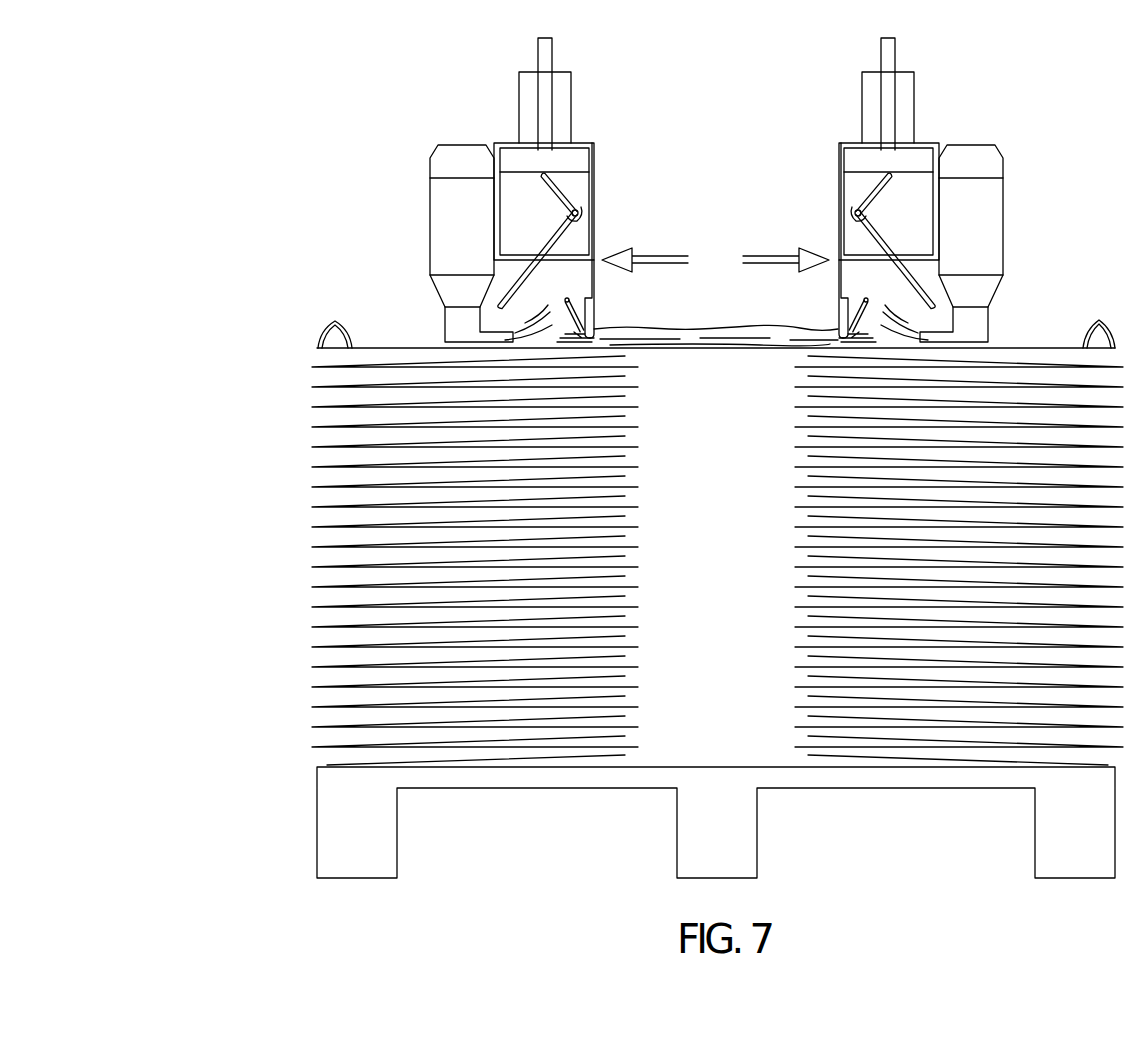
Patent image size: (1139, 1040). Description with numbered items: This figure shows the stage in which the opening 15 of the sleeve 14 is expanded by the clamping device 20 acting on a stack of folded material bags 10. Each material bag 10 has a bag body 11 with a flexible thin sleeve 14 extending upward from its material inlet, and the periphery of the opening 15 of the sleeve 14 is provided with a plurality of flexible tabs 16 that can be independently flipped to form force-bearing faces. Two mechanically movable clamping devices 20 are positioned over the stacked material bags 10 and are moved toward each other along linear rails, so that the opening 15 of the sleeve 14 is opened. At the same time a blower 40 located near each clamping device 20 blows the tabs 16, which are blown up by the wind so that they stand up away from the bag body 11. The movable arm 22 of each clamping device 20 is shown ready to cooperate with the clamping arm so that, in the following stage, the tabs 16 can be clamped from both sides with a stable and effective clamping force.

The material bag 10 is at (303, 370).
The bag body 11 is at (418, 347).
The sleeve 14 is at (595, 335).
The opening 15 is at (750, 332).
The tabs 16 is at (570, 300).
The clamping device 20 is at (593, 210).
The movable arm 22 is at (510, 290).
The blower 40 is at (437, 205).